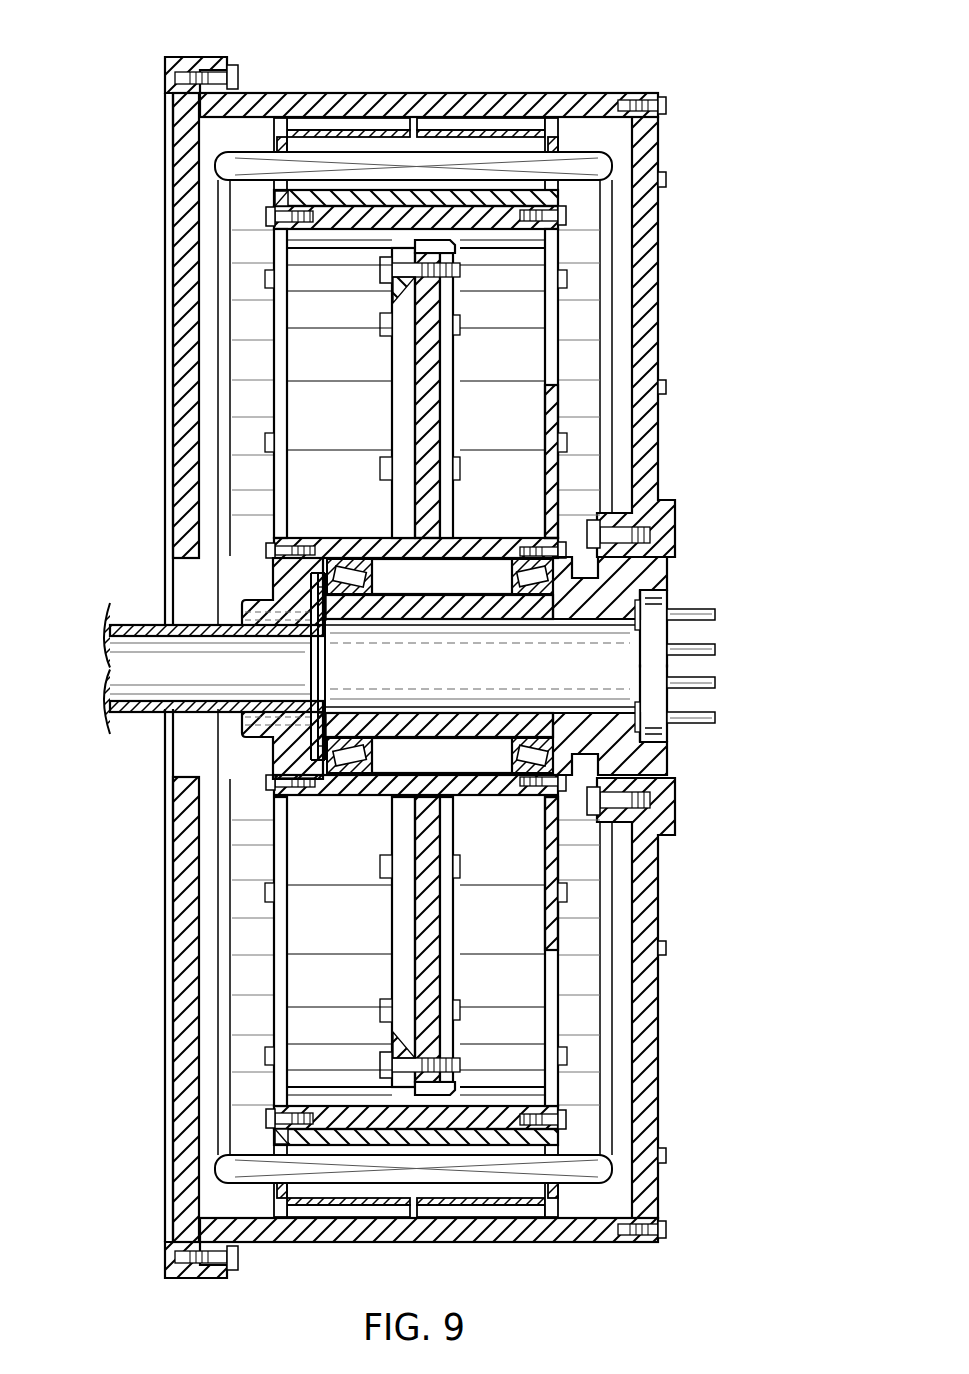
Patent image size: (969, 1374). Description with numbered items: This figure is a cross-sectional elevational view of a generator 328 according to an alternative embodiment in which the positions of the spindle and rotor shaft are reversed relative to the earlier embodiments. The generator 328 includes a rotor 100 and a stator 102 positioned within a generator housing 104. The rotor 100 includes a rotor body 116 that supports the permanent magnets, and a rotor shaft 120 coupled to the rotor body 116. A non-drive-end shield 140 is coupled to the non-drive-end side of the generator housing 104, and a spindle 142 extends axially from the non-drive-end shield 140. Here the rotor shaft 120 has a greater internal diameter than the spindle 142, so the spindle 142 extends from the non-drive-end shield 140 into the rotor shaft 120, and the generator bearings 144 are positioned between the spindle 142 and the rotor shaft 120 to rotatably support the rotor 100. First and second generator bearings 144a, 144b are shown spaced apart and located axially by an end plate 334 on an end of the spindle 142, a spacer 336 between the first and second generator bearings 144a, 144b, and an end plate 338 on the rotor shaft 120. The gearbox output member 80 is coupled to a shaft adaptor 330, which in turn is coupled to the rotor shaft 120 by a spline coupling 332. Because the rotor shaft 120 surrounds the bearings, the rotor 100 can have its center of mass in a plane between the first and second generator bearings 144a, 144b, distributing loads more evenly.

The generator 328 is at (572, 80).
The generator housing 104 is at (340, 93).
The non-drive-end shield 140 is at (660, 441).
The stator 102 is at (215, 158).
The rotor 100 is at (262, 204).
The rotor body 116 is at (305, 240).
The rotor shaft 120 is at (305, 533).
The spacer 336 is at (485, 785).
The spline coupling 332 is at (250, 600).
The shaft adaptor 330 is at (250, 745).
The gearbox output member 80 is at (140, 628).
The end plate 334 is at (325, 793).
The generator bearing 144 is at (476, 666).
The first generator bearing 144a is at (333, 597).
The second generator bearing 144b is at (522, 598).
The spindle 142 is at (636, 572).
The end plate 338 is at (575, 775).